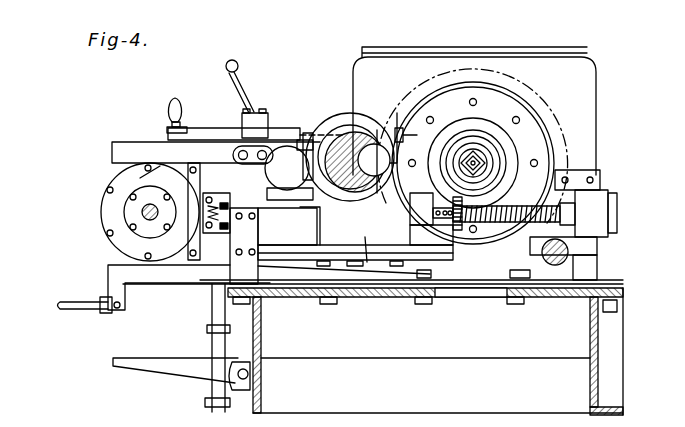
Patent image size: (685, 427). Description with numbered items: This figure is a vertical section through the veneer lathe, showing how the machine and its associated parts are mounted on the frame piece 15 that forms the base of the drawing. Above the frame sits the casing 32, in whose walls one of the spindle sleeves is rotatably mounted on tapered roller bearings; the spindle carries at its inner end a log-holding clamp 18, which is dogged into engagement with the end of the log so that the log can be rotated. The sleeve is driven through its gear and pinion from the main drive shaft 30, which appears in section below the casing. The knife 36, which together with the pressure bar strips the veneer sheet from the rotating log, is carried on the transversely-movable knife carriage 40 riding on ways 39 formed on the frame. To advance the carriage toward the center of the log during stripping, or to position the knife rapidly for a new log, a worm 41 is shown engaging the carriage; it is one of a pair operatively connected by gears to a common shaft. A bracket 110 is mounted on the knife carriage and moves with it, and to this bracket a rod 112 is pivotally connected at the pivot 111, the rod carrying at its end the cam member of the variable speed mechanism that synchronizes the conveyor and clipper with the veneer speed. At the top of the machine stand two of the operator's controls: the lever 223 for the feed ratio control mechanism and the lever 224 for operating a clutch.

The frame piece 15 is at (262, 388).
The log-holding clamp 18 is at (477, 161).
The main drive shaft 30 is at (568, 258).
The casing 32 is at (575, 80).
The knife 36 is at (358, 205).
The ways 39 is at (304, 272).
The knife carriage 40 is at (367, 240).
The worm 41 is at (553, 168).
The bracket 110 is at (181, 273).
The pivot 111 is at (119, 309).
The rod 112 is at (84, 304).
The lever 223 is at (244, 88).
The lever 224 is at (180, 99).